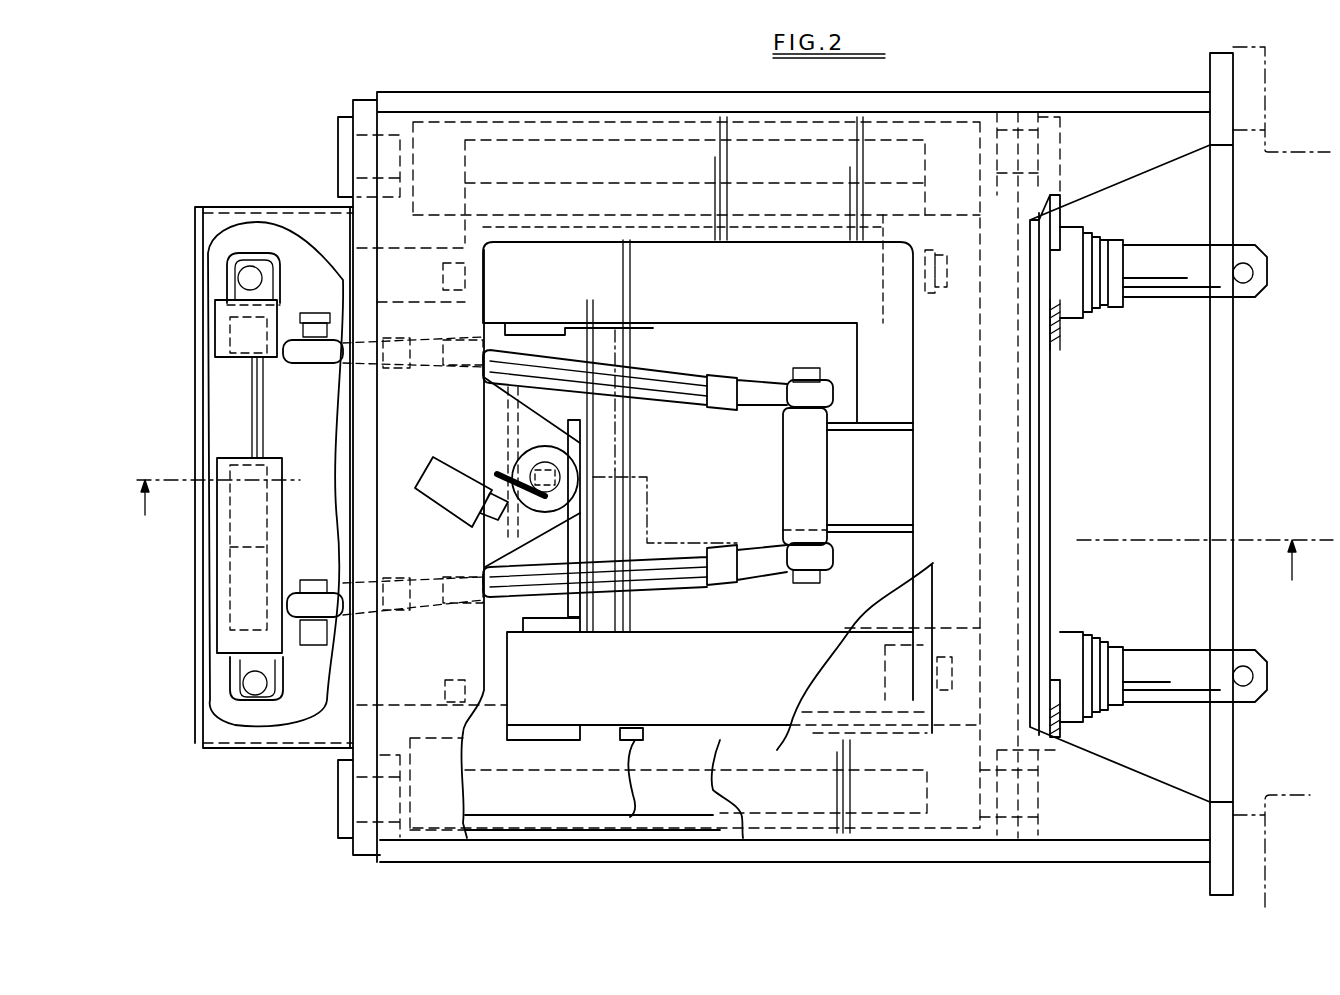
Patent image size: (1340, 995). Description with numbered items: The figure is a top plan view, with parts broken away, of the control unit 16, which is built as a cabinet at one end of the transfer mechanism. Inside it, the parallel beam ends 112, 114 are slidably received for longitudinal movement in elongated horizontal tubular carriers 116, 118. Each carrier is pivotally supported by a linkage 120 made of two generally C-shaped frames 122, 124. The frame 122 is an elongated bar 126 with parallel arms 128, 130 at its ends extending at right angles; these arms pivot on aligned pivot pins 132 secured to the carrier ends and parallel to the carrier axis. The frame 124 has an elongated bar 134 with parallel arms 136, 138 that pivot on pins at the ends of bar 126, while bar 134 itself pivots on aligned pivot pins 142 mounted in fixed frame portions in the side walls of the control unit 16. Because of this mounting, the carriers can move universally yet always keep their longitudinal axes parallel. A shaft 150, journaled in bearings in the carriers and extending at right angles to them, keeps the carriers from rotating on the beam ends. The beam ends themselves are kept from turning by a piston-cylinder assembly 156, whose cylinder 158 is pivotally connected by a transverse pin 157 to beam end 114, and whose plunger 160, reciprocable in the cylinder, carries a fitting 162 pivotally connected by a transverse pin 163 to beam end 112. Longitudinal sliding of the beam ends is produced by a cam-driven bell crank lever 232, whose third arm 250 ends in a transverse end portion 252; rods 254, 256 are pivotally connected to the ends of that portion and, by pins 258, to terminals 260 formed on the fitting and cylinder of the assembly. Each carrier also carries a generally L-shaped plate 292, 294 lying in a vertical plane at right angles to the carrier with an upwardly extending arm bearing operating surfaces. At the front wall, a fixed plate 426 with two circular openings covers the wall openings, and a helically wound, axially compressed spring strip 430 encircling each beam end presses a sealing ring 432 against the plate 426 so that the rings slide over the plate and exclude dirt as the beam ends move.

The control unit 16 is at (575, 82).
The beam end 112 is at (1173, 287).
The beam end 114 is at (1162, 652).
The tubular carrier 116 is at (830, 336).
The tubular carrier 118 is at (787, 642).
The linkage 120 is at (662, 140).
The C-shaped frame 122 is at (740, 140).
The C-shaped frame 124 is at (912, 126).
The elongated bar 126 is at (525, 797).
The arm 128 is at (490, 665).
The arm 130 is at (905, 642).
The pivot pin 132 is at (447, 280).
The elongated bar 134 is at (615, 825).
The arm 136 is at (425, 750).
The arm 138 is at (958, 808).
The pivot pin 142 is at (390, 130).
The shaft 150 is at (630, 462).
The piston-cylinder assembly 156 is at (217, 516).
The transverse pin 157 is at (252, 689).
The cylinder 158 is at (225, 570).
The plunger 160 is at (237, 401).
The fitting 162 is at (215, 344).
The transverse pin 163 is at (250, 279).
The bell crank lever 232 is at (924, 443).
The third arm 250 is at (903, 514).
The transverse end portion 252 is at (795, 501).
The rod 254 is at (663, 374).
The rod 256 is at (657, 582).
The pin 258 is at (314, 386).
The terminal 260 is at (525, 449).
The L-shaped plate 292 is at (518, 393).
The L-shaped plate 294 is at (530, 553).
The plate 426 is at (1050, 475).
The spring strip 430 is at (1090, 228).
The sealing ring 432 is at (1062, 345).